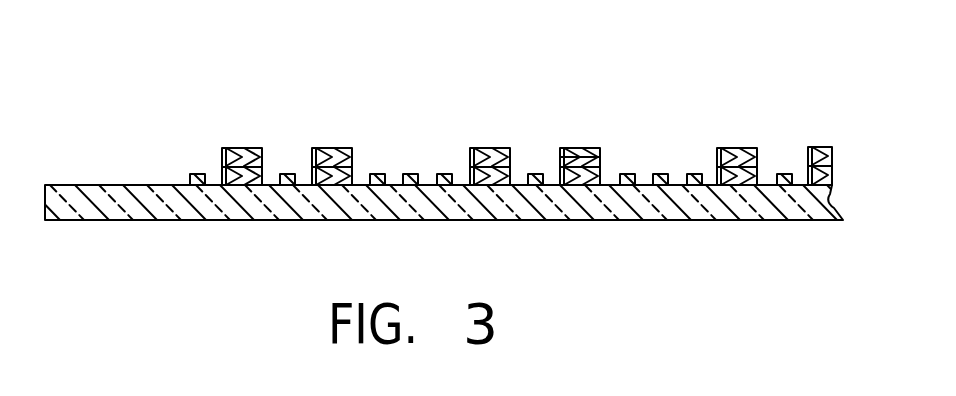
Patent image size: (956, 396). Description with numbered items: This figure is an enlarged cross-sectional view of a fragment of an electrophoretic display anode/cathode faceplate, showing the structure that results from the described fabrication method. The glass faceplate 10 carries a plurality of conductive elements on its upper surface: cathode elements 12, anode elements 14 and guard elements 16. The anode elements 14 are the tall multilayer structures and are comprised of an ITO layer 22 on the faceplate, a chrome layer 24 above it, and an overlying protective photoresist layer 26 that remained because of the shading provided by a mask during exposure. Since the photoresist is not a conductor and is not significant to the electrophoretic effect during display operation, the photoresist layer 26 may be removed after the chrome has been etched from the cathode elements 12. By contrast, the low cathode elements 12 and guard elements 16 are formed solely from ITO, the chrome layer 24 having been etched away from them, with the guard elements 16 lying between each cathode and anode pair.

The faceplate 10 is at (167, 213).
The cathode elements 12 is at (536, 175).
The anode elements 14 is at (337, 140).
The guard elements 16 is at (410, 175).
The ITO layer 22 is at (604, 182).
The chrome layer 24 is at (575, 166).
The protective photoresist layer 26 is at (570, 146).